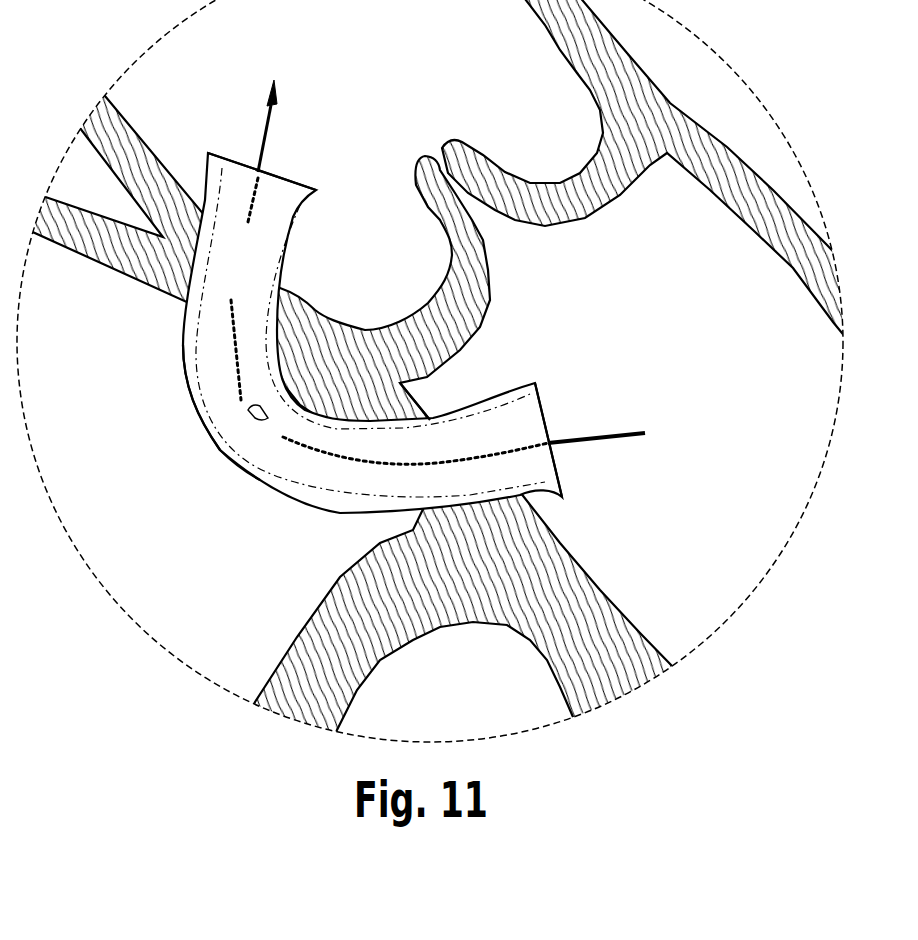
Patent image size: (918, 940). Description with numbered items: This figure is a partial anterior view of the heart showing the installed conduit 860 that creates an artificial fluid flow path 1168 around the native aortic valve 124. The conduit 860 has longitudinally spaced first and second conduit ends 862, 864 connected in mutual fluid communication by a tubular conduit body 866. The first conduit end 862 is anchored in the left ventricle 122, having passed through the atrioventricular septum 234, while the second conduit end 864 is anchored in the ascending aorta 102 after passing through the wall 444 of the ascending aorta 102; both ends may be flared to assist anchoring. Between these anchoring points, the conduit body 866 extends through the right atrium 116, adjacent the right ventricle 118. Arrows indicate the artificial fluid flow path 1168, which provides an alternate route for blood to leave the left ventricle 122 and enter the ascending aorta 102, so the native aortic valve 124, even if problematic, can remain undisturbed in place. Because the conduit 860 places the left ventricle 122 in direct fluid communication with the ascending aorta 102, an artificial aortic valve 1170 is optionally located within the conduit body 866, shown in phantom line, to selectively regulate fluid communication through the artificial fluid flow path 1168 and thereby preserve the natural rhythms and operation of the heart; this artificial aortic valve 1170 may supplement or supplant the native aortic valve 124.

The ascending aorta 102 is at (349, 46).
The right atrium 116 is at (93, 417).
The right ventricle 118 is at (461, 713).
The left ventricle 122 is at (739, 537).
The native aortic valve 124 is at (419, 132).
The atrioventricular septum 234 is at (415, 392).
The wall of the ascending aorta 444 is at (295, 290).
The conduit 860 is at (259, 286).
The first conduit end 862 is at (587, 470).
The second conduit end 864 is at (218, 128).
The tubular conduit body 866 is at (248, 517).
The artificial fluid flow path 1168 is at (268, 130).
The artificial aortic valve 1170 is at (280, 430).